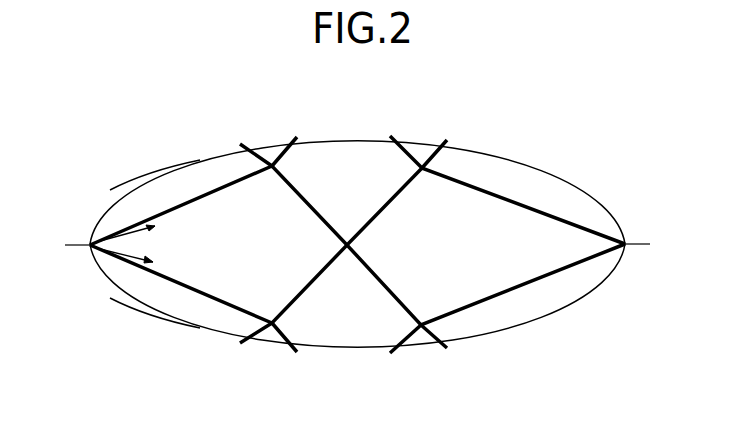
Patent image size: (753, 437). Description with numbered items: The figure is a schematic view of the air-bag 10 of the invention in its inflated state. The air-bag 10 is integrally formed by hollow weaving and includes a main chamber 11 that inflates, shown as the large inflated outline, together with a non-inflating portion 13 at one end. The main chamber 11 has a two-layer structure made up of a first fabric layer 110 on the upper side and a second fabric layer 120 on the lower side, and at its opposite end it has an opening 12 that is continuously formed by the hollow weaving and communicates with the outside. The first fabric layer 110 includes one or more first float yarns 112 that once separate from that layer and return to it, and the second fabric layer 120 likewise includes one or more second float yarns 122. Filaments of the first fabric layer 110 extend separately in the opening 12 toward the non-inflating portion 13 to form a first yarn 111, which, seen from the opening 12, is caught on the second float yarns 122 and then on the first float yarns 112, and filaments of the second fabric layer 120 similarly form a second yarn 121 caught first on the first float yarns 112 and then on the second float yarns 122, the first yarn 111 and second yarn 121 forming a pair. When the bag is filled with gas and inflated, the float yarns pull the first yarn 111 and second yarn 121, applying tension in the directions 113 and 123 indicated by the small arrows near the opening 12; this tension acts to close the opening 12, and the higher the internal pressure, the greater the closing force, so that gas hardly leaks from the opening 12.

The air-bag 10 is at (555, 167).
The main chamber 11 is at (450, 245).
The opening 12 is at (77, 243).
The non-inflating portion 13 is at (643, 243).
The first fabric layer 110 is at (140, 178).
The first yarn 111 is at (242, 303).
The first float yarn 112 is at (407, 150).
The direction of a force to be applied to the first yarn 113 is at (112, 285).
The second fabric layer 120 is at (133, 305).
The second yarn 121 is at (163, 217).
The second float yarn 122 is at (390, 350).
The direction of a force to be applied to the second yarn 123 is at (135, 225).